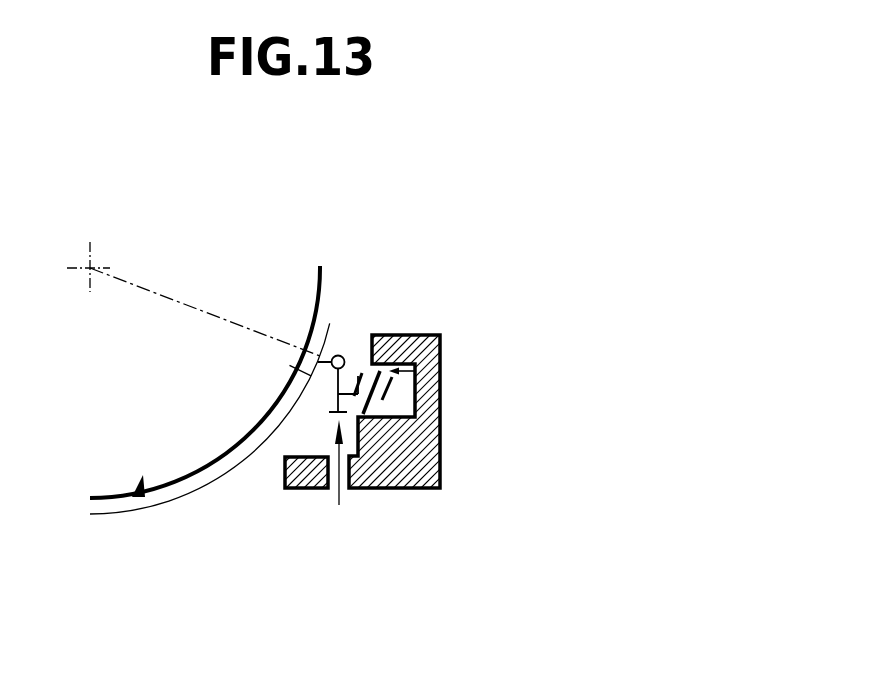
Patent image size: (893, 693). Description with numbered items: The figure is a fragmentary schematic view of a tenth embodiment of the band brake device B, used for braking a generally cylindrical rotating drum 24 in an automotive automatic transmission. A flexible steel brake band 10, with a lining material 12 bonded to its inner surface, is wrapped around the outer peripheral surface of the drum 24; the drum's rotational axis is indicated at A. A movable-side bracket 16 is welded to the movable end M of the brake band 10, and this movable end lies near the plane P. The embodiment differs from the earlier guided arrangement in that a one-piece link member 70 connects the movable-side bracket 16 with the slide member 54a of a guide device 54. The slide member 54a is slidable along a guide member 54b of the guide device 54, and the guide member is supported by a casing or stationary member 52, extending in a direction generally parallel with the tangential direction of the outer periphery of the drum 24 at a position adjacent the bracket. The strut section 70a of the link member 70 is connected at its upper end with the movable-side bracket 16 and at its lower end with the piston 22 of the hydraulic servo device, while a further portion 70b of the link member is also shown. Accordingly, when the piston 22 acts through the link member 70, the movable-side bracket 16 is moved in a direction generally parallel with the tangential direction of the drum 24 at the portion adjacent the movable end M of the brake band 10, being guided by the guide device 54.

The brake band 10 is at (100, 517).
The lining material 12 is at (183, 482).
The movable-side bracket 16 is at (330, 342).
The piston 22 is at (339, 505).
The rotating drum 24 is at (138, 505).
The stationary member 52 is at (441, 432).
The guide device 54 is at (414, 361).
The slide member 54a is at (396, 391).
The guide member 54b is at (362, 419).
The link member 70 is at (352, 373).
The strut section 70a is at (345, 386).
The blade portion 70b is at (395, 489).
The axis A is at (92, 266).
The band brake device B is at (395, 247).
The movable end M is at (294, 368).
The plane P is at (187, 305).